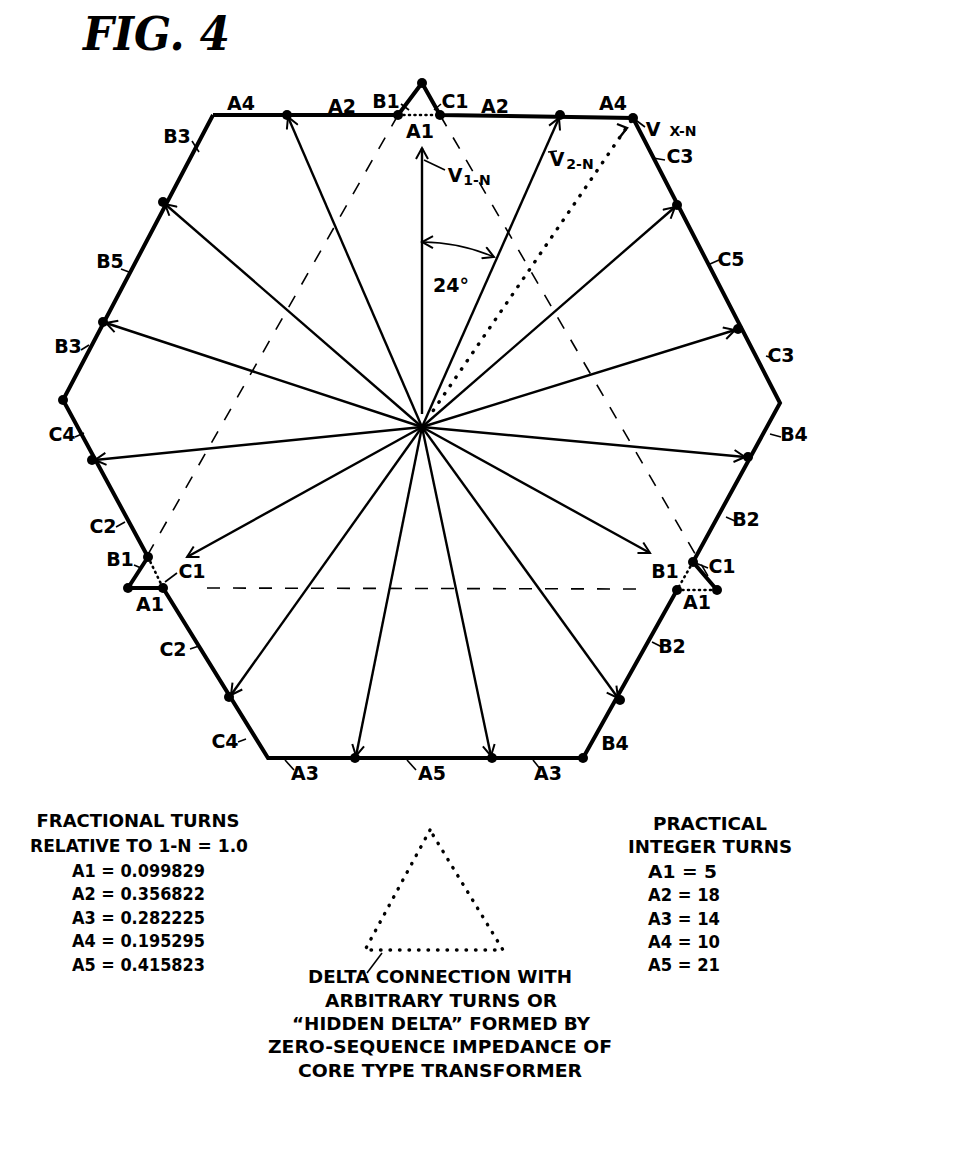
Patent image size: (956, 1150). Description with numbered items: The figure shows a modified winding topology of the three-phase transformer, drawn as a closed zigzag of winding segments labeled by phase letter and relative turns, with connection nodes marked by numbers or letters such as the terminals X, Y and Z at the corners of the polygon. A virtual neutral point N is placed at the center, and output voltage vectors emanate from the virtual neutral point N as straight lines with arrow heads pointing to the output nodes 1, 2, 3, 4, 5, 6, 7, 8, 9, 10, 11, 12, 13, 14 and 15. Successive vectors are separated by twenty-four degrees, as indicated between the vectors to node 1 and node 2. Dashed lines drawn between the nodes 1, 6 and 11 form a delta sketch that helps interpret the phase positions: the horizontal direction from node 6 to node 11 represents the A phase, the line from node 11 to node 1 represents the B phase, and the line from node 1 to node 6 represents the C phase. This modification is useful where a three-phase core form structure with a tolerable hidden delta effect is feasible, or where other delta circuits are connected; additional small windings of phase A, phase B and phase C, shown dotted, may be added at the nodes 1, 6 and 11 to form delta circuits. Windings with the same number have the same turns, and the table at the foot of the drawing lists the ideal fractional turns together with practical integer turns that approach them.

The output node 1 is at (423, 83).
The output node 2 is at (494, 257).
The output node 3 is at (560, 301).
The output node 4 is at (738, 329).
The output node 5 is at (748, 457).
The output node 6 is at (717, 590).
The output node 7 is at (528, 579).
The output node 8 is at (463, 608).
The output node 9 is at (382, 608).
The output node 10 is at (307, 575).
The output node 11 is at (128, 588).
The output node 12 is at (92, 460).
The output node 13 is at (103, 322).
The output node 14 is at (281, 299).
The output node 15 is at (346, 256).
The terminal X is at (635, 116).
The terminal Y is at (583, 758).
The terminal Z is at (63, 400).
The virtual neutral point N is at (422, 294).